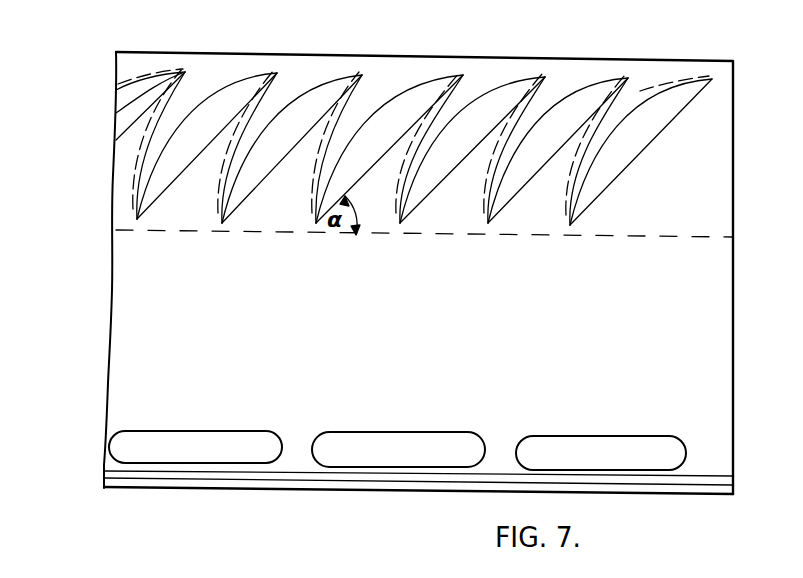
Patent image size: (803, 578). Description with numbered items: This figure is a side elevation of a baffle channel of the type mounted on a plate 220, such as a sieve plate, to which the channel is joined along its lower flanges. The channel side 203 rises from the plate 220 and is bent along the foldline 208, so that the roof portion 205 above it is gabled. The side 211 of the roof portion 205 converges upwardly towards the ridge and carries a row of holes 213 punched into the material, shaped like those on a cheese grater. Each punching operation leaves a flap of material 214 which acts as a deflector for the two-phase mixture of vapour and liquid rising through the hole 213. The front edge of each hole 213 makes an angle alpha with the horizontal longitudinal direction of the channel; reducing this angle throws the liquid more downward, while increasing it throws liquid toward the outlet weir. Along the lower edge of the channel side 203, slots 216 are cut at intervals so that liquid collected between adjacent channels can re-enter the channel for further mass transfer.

The roof portion 205 is at (393, 55).
The side of the roof portion 211 is at (126, 176).
The channel side 203 is at (130, 386).
The plate 220 is at (104, 486).
The slots 216 is at (329, 447).
The foldline 208 is at (252, 231).
The holes 213 is at (607, 173).
The flap of material 214 is at (256, 150).